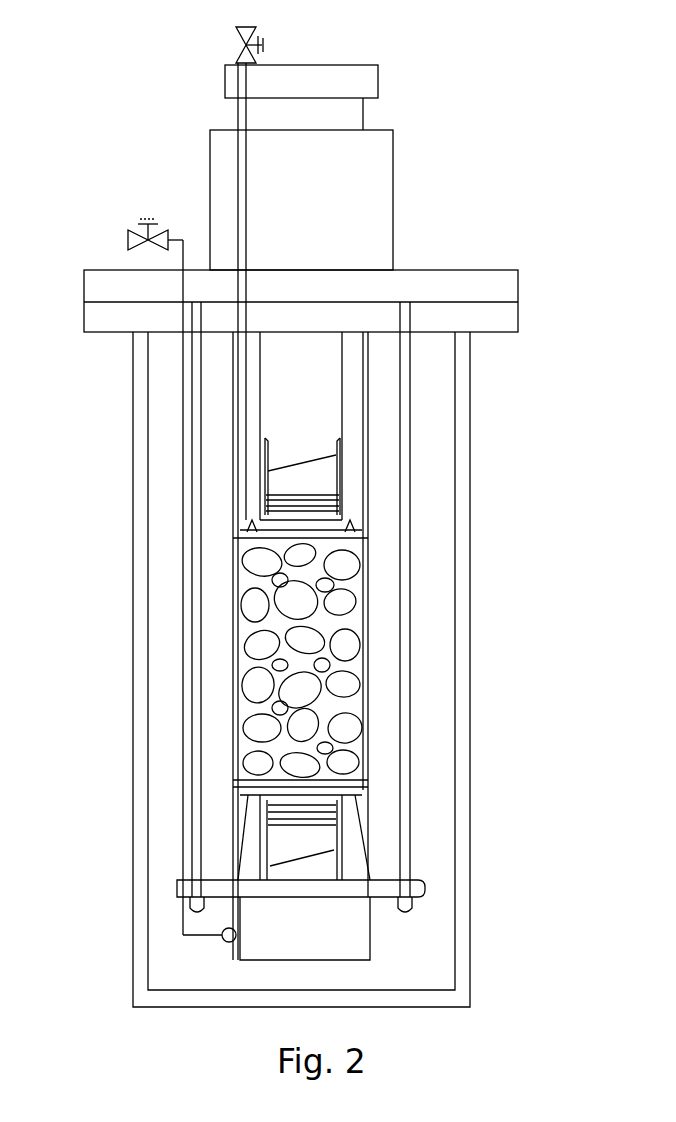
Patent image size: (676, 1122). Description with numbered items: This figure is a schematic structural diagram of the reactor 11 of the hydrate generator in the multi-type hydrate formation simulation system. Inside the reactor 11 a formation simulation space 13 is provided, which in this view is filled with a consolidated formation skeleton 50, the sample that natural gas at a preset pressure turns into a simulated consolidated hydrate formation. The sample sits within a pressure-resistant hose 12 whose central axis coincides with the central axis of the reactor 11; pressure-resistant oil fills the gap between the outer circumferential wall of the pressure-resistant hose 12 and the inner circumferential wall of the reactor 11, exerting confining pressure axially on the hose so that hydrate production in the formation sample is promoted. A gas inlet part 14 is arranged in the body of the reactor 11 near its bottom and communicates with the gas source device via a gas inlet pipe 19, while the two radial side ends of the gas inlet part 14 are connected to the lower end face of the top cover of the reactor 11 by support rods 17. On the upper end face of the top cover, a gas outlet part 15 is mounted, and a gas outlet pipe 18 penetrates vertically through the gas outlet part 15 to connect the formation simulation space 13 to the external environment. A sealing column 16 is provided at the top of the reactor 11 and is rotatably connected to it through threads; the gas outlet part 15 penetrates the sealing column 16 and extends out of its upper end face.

The reactor 11 is at (466, 750).
The pressure-resistant hose 12 is at (370, 487).
The formation simulation space 13 is at (258, 718).
The gas inlet part 14 is at (342, 938).
The gas outlet part 15 is at (358, 82).
The sealing column 16 is at (368, 202).
The support rods 17 is at (197, 500).
The gas outlet pipe 18 is at (245, 156).
The gas inlet pipe 19 is at (183, 434).
The consolidated formation skeleton 50 is at (350, 660).